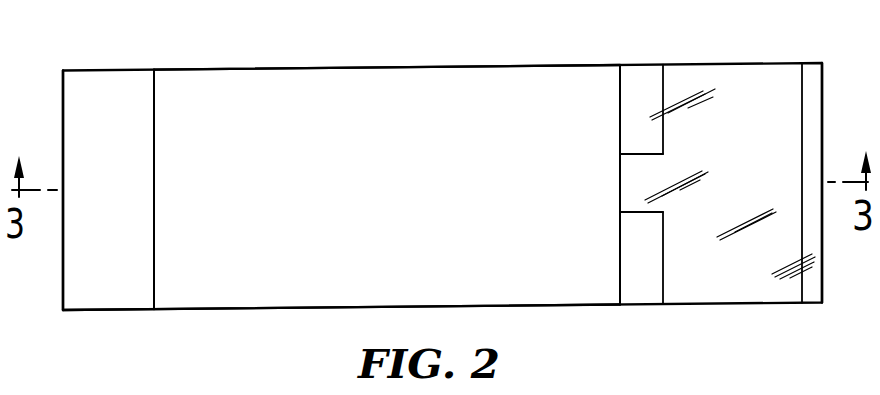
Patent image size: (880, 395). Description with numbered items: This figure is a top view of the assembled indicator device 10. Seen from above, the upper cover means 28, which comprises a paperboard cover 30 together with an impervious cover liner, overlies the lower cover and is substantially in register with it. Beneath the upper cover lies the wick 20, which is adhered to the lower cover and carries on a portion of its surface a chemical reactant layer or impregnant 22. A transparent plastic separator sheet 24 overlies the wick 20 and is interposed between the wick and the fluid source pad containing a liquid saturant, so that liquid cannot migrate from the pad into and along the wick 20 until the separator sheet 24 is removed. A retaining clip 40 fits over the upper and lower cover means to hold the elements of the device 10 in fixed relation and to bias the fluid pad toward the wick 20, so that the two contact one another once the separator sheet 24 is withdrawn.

The device 10 is at (472, 58).
The wick 20 is at (629, 157).
The chemical reactant layer or impregnant 22 is at (800, 79).
The transparent plastic separator sheet 24 is at (823, 76).
The upper cover means 28 is at (315, 90).
The paperboard cover 30 is at (375, 82).
The retaining clip 40 is at (108, 283).